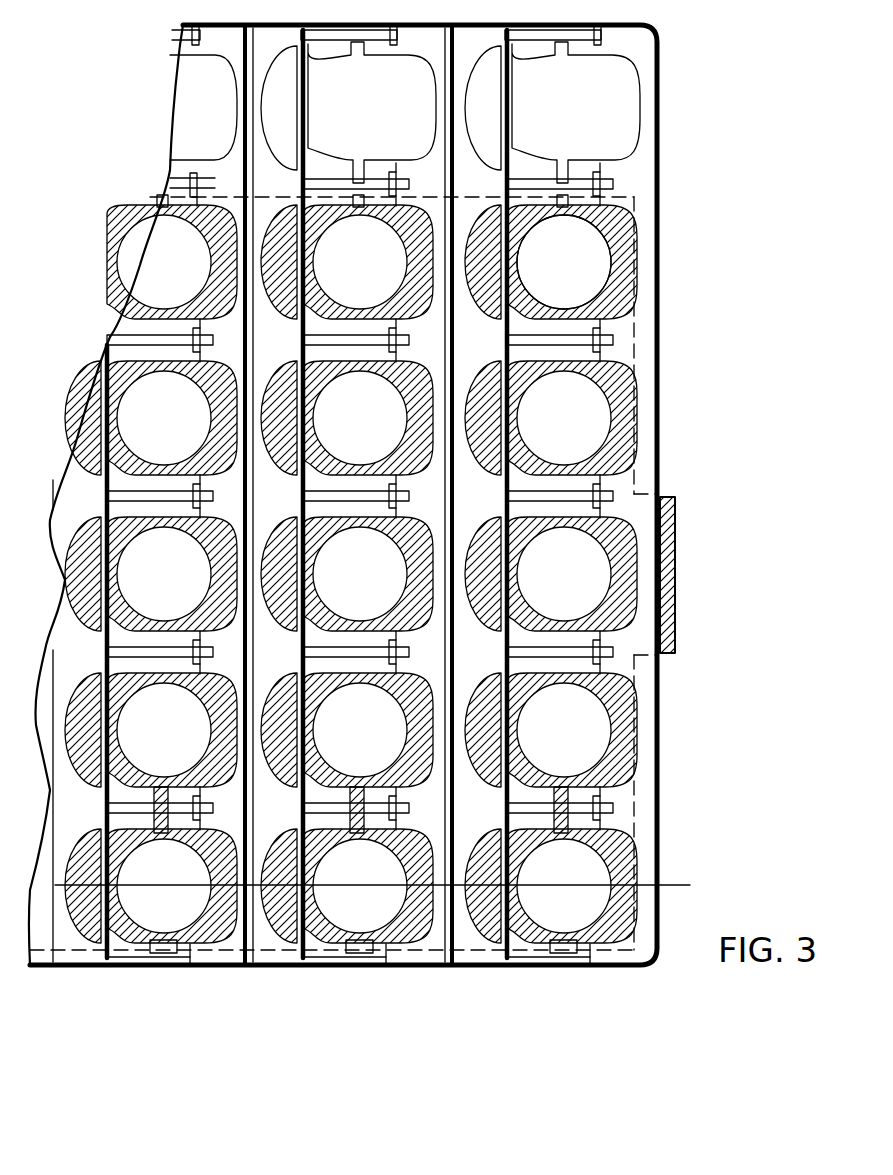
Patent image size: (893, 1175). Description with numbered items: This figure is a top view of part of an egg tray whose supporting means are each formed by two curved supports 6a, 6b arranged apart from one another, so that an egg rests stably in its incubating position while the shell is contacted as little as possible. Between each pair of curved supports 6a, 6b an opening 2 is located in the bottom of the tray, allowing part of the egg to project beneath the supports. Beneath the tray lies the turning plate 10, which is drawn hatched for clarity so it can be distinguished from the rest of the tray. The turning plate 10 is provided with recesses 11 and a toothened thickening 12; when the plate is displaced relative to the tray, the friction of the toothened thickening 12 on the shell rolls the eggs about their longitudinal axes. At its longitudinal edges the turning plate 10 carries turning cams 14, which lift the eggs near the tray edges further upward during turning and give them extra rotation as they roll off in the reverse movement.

The opening 2 is at (548, 250).
The curved support 6a is at (504, 98).
The curved support 6b is at (641, 130).
The turning plate 10 is at (618, 238).
The recesses 11 is at (586, 281).
The toothened thickening 12 is at (514, 421).
The turning cams 14 is at (358, 196).